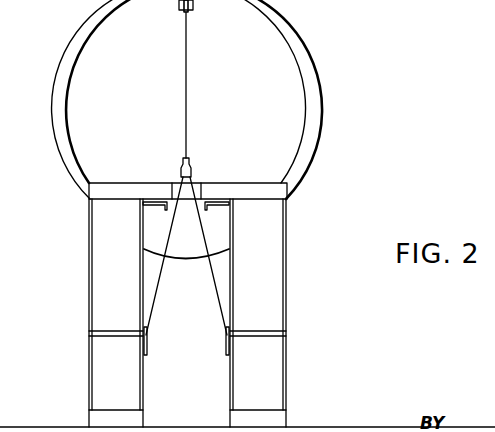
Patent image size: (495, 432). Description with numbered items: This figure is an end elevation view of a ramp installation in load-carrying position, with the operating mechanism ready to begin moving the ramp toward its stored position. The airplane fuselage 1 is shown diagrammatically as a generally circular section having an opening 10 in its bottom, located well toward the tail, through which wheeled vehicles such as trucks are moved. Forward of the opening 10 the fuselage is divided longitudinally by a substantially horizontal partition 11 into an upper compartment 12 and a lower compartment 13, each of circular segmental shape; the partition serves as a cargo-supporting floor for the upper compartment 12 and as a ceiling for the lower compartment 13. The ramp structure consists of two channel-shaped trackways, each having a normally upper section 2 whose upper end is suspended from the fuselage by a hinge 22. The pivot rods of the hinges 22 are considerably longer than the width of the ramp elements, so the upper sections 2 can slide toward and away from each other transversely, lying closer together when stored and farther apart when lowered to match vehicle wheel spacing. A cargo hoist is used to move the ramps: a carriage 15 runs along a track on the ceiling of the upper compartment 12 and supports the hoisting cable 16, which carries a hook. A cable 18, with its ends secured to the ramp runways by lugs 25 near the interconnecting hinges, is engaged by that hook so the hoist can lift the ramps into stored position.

The airplane fuselage 1 is at (306, 55).
The upper ramp section 2 is at (91, 298).
The opening 10 is at (273, 192).
The partition 11 is at (239, 158).
The upper compartment 12 is at (122, 96).
The lower compartment 13 is at (186, 258).
The carriage 15 is at (195, 9).
The hoisting cable 16 is at (187, 97).
The cable 18 is at (219, 306).
The hinge 22 is at (217, 207).
The lugs 25 is at (226, 343).